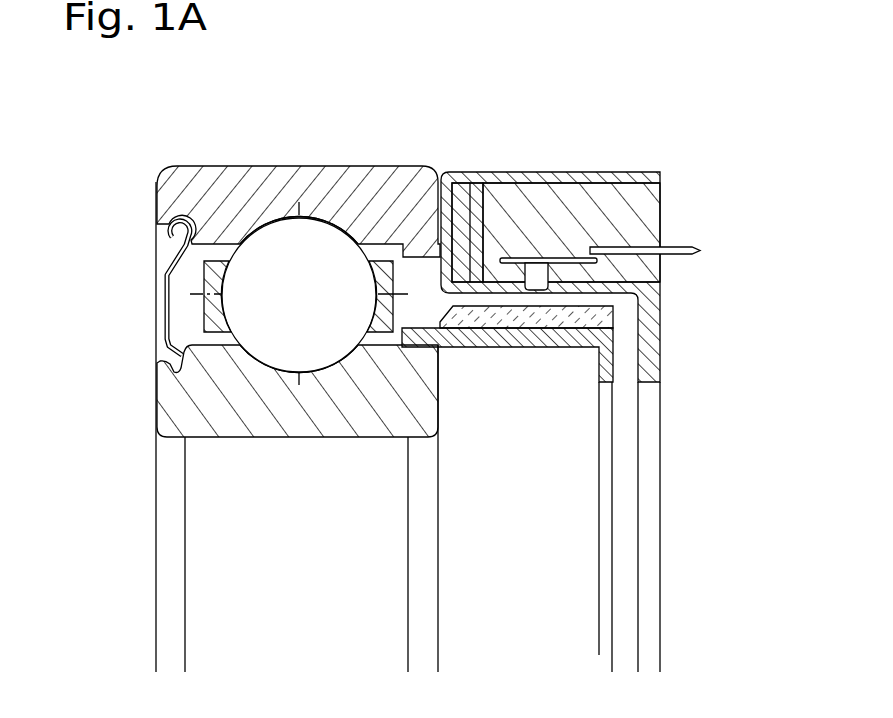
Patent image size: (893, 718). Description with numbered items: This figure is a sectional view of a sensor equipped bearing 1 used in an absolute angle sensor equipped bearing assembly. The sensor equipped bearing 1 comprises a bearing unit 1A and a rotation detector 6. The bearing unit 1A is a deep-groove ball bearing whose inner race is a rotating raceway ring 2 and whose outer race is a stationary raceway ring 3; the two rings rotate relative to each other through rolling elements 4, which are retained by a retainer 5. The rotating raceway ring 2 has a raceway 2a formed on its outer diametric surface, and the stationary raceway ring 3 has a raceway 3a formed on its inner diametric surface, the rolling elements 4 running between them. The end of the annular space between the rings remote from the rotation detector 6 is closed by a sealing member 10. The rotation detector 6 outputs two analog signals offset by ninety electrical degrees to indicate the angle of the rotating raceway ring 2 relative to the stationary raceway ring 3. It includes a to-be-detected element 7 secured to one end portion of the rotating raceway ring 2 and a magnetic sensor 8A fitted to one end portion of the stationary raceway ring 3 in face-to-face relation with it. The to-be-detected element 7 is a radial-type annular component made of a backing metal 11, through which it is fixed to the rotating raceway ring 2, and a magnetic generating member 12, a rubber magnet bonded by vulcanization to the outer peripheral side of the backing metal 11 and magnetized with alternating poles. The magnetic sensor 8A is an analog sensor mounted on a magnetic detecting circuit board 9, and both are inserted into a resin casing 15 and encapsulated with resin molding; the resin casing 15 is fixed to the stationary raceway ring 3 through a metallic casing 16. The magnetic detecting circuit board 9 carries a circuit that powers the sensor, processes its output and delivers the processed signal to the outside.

The sensor equipped bearing 1 is at (266, 147).
The bearing unit 1A is at (225, 162).
The rotating raceway ring 2 is at (182, 397).
The raceway 2a is at (283, 360).
The stationary raceway ring 3 is at (312, 174).
The raceway 3a is at (338, 225).
The rolling elements 4 is at (270, 242).
The retainer 5 is at (203, 283).
The rotation detector 6 is at (666, 296).
The to-be-detected element 7 is at (733, 406).
The magnetic sensor 8A is at (535, 277).
The magnetic detecting circuit board 9 is at (570, 240).
The sealing member 10 is at (163, 307).
The backing metal 11 is at (560, 347).
The magnetic generating member 12 is at (577, 320).
The resin casing 15 is at (518, 207).
The metallic casing 16 is at (461, 178).